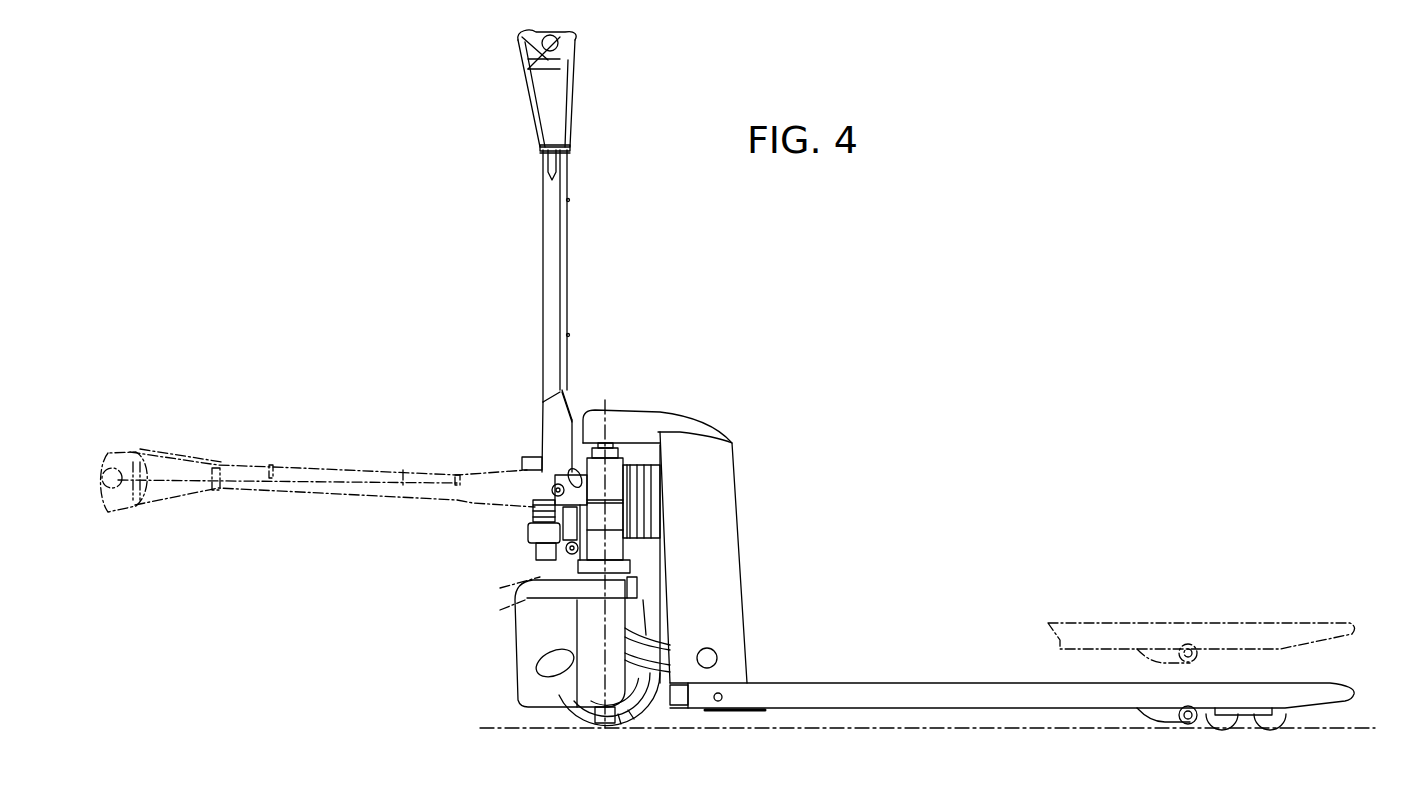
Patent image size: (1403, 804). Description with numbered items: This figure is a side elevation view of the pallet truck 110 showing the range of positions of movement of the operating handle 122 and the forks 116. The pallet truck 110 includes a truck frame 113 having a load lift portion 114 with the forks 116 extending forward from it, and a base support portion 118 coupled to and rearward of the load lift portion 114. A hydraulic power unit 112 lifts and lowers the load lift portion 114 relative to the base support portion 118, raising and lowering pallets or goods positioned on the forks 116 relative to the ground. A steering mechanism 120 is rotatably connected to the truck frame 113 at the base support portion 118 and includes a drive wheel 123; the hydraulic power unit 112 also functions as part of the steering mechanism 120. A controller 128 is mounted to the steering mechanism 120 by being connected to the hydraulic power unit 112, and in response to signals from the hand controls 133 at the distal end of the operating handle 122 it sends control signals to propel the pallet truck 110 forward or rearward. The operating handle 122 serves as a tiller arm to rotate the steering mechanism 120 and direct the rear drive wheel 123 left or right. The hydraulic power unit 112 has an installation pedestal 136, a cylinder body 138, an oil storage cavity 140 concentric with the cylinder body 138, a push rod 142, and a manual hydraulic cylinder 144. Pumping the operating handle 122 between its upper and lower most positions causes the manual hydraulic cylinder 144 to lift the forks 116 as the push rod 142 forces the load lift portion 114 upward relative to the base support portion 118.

The pallet truck 110 is at (1005, 222).
The hydraulic power unit 112 is at (644, 553).
The truck frame 113 is at (690, 710).
The load lift portion 114 is at (695, 412).
The forks 116 is at (1318, 690).
The base support portion 118 is at (643, 587).
The steering mechanism 120 is at (575, 407).
The operating handle 122 is at (553, 228).
The drive wheel 123 is at (578, 717).
The controller 128 is at (655, 497).
The hand controls 133 is at (580, 52).
The installation pedestal 136 is at (585, 565).
The cylinder body 138 is at (568, 555).
The oil storage cavity 140 is at (608, 478).
The push rod 142 is at (607, 444).
The manual hydraulic cylinder 144 is at (530, 530).